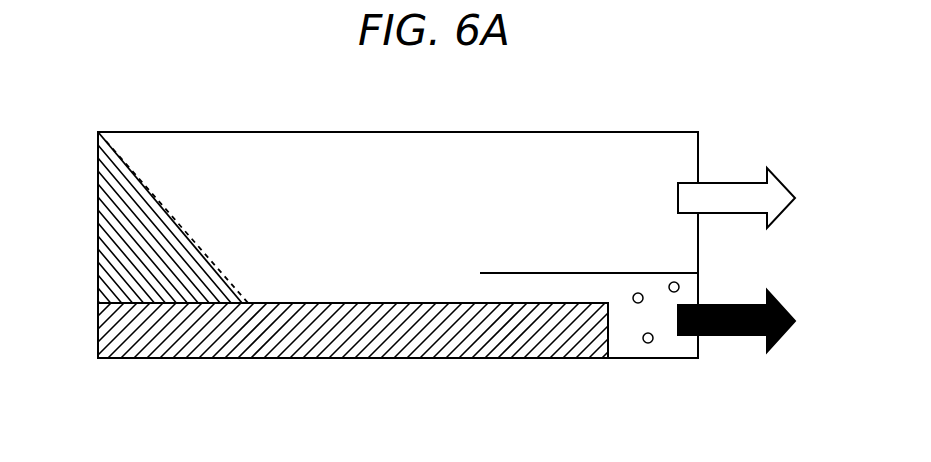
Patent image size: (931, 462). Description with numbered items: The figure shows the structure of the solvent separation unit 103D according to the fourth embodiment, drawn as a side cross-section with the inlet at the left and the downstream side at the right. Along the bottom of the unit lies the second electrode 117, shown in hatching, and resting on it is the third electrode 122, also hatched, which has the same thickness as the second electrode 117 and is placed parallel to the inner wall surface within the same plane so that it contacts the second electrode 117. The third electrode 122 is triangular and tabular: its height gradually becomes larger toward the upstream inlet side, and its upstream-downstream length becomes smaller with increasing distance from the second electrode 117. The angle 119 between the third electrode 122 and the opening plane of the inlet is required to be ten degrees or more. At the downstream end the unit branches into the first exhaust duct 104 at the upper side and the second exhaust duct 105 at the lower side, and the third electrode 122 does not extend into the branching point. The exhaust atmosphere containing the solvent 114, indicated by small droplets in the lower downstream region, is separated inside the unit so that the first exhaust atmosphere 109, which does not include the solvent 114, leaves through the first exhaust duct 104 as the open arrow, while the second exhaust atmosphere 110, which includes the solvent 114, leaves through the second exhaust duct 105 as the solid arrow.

The solvent separation unit 103D is at (352, 124).
The first exhaust duct 104 is at (622, 137).
The second exhaust duct 105 is at (625, 343).
The first exhaust atmosphere 109 is at (738, 180).
The second exhaust atmosphere 110 is at (743, 343).
The solvent 114 is at (650, 332).
The second electrode 117 is at (352, 360).
The angle 119 is at (98, 180).
The third electrode 122 is at (197, 247).